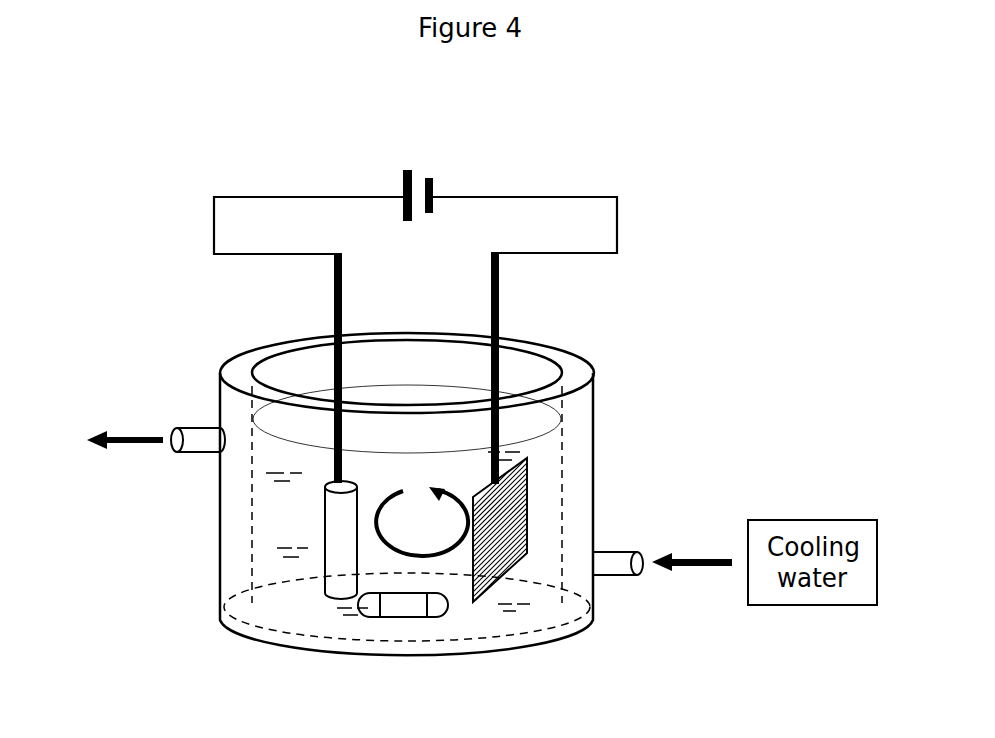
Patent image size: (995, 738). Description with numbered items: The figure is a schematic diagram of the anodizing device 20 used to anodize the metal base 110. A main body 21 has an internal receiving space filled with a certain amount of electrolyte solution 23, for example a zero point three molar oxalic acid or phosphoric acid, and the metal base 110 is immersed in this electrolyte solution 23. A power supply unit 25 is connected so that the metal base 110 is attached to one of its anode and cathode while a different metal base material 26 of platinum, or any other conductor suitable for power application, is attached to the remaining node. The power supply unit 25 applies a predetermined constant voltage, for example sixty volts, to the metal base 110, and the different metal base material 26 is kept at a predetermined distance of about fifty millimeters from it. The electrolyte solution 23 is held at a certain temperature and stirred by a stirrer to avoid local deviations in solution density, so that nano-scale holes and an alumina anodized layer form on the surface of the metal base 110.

The anodizing device 20 is at (409, 413).
The main body 21 is at (580, 378).
The electrolyte solution 23 is at (412, 630).
The power supply unit 25 is at (437, 164).
The different metal base material 26 is at (539, 598).
The metal base 110 is at (313, 597).